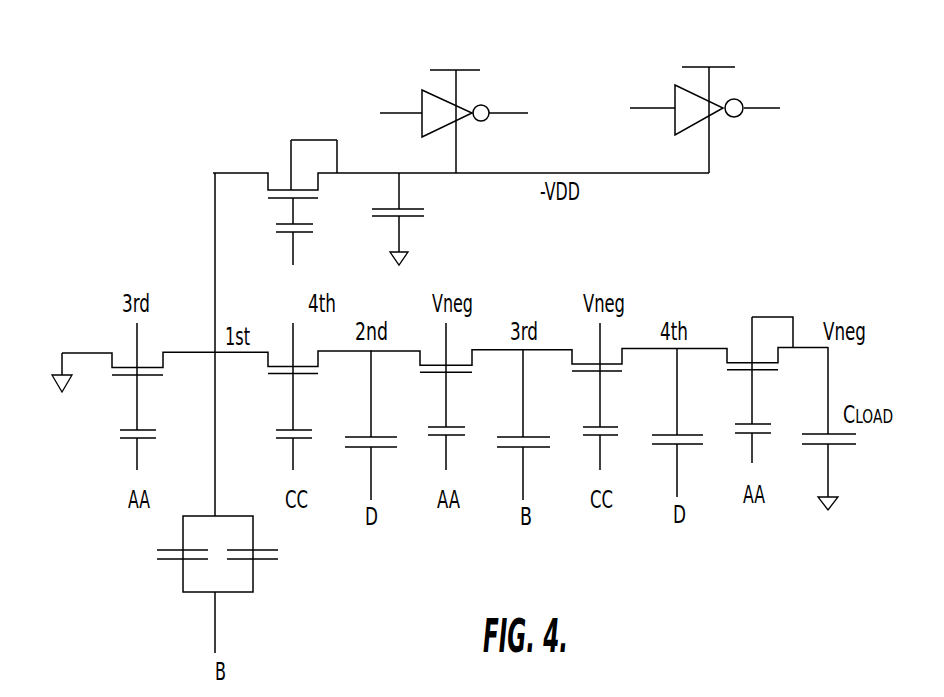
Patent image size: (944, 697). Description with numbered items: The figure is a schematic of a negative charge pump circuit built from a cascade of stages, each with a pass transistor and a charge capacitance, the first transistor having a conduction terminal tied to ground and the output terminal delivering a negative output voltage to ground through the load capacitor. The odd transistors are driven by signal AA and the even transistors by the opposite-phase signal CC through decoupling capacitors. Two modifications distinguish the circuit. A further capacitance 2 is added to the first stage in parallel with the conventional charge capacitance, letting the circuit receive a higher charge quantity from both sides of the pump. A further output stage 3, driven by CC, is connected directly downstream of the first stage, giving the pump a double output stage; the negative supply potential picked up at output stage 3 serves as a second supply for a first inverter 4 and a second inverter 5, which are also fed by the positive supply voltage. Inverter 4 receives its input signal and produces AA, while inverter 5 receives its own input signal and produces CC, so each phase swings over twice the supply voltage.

The further capacitance 2 is at (183, 577).
The further output stage 3 is at (317, 105).
The first inverter 4 is at (424, 90).
The second inverter 5 is at (677, 87).